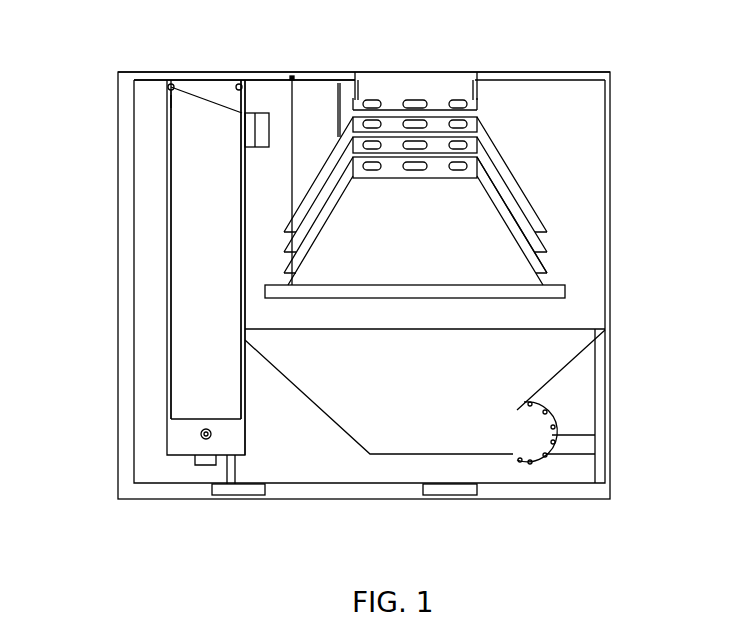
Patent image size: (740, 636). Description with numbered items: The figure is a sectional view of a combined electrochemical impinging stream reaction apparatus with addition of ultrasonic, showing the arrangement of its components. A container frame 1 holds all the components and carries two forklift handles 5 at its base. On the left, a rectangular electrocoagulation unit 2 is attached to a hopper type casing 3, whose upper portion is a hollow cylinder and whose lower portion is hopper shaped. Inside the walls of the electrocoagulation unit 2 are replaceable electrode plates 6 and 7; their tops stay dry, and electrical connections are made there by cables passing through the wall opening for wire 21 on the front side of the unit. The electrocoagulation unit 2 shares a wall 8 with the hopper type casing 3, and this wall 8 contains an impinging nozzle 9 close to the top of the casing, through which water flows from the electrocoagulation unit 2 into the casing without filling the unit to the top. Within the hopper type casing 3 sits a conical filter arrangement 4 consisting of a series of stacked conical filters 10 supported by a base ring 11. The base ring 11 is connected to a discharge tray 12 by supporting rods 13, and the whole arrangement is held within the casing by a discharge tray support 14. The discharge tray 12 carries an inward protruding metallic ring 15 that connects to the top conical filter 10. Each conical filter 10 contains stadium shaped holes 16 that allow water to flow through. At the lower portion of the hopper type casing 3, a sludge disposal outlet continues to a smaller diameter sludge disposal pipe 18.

The container frame 1 is at (603, 399).
The electrocoagulation unit 2 is at (157, 400).
The hopper type casing 3 is at (531, 363).
The conical filter arrangement 4 is at (480, 289).
The forklift handles 5 is at (462, 493).
The electrode plate 6 is at (202, 162).
The electrode plate 7 is at (225, 85).
The wall 8 is at (236, 268).
The impinging nozzle 9 is at (253, 118).
The conical filter 10 is at (510, 258).
The base ring 11 is at (550, 293).
The discharge tray 12 is at (535, 73).
The supporting rods 13 is at (292, 135).
The discharge tray support 14 is at (248, 72).
The inward protruding metallic ring 15 is at (475, 80).
The stadium shaped holes 16 is at (417, 102).
The sludge disposal pipe 18 is at (570, 445).
The wall opening for wire 21 is at (167, 108).